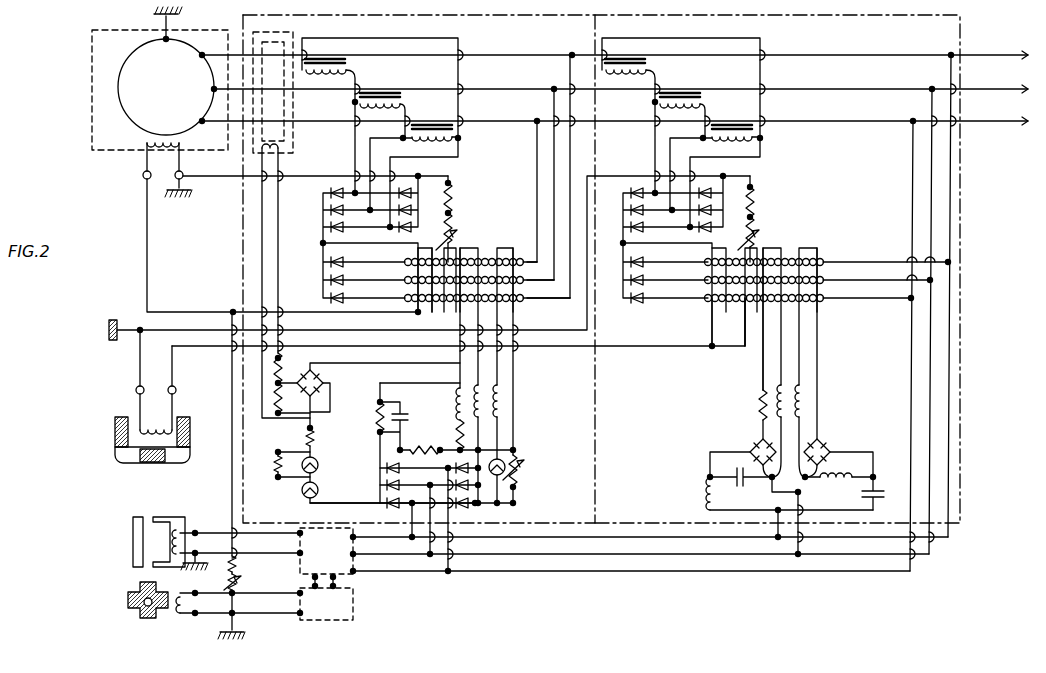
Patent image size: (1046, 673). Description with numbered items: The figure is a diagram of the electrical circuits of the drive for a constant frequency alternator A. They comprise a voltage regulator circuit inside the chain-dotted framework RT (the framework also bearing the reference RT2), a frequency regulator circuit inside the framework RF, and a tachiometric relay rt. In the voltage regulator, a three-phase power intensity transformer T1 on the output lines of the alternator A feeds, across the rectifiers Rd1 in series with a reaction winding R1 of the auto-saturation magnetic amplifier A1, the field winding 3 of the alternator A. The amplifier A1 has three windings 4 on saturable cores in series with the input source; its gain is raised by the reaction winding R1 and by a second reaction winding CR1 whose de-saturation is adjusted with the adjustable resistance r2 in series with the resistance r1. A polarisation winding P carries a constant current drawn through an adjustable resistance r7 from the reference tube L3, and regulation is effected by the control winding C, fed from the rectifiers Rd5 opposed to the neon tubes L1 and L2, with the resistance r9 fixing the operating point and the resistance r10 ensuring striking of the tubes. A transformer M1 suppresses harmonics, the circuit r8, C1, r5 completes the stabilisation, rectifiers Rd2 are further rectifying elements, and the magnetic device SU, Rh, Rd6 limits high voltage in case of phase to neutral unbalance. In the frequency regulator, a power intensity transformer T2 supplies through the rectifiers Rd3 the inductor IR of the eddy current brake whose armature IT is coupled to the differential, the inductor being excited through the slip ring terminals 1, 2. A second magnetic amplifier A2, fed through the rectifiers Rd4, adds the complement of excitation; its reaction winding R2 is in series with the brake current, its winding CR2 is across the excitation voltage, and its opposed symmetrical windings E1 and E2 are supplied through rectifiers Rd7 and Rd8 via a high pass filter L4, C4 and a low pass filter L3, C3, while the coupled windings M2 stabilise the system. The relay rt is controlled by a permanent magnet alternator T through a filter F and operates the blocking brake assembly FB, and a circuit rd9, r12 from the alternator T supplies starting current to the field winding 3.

The alternator A is at (94, 100).
The field winding 3 is at (165, 146).
The magnetic device SU is at (278, 148).
The three-phase power intensity transformer T1 is at (393, 72).
The power intensity transformer T2 is at (707, 72).
The regulator unit RT2 is at (601, 9).
The voltage regulator circuit RT is at (243, 242).
The frequency regulator circuit RF is at (961, 280).
The rectifiers Rd1 is at (314, 216).
The rectifier Rd2 is at (324, 276).
The rectifiers Rd3 is at (615, 206).
The rectifiers Rd4 is at (616, 271).
The rectifiers Rd5 is at (430, 485).
The rectifier of magnetic device Rd6 is at (329, 378).
The bridge rectifier Rd7 is at (830, 446).
The bridge rectifier Rd8 is at (751, 448).
The resistance r1 is at (452, 196).
The adjustable resistance r2 is at (458, 236).
The resistance r5 is at (456, 438).
The adjustable resistance r7 is at (524, 478).
The resistance r8 is at (378, 410).
The adjustable resistance r9 is at (313, 436).
The resistance r10 is at (276, 464).
The resistance r12 is at (234, 563).
The rectifier rd9 is at (236, 582).
The auto-saturation three-phase magnetic amplifier A1 is at (492, 240).
The auto-saturation three-phase magnetic amplifier A2 is at (795, 242).
The windings 4 is at (528, 298).
The reaction winding R1 is at (416, 306).
The reaction winding R2 is at (709, 305).
The second reaction winding CR1 is at (432, 312).
The reaction winding CR2 is at (744, 315).
The control winding C is at (466, 304).
The polarisation winding P is at (514, 300).
The symmetrical winding E1 is at (818, 302).
The symmetrical winding E2 is at (764, 306).
The terminal 1 is at (136, 387).
The terminal 2 is at (176, 390).
The inductor IR is at (150, 426).
The armature IT is at (118, 454).
The rheostat of magnetic device Rh is at (270, 388).
The capacitor C1 is at (406, 416).
The capacitor of low pass filter C3 is at (742, 488).
The capacitor of high pass filter C4 is at (881, 491).
The transformer M1 is at (504, 402).
The coupled windings M2 is at (803, 402).
The neon regulating tube L1 is at (318, 465).
The neon regulating tube L2 is at (317, 490).
The reference tube / low pass filter inductor L3 is at (506, 460).
The inductor of high pass filter L4 is at (834, 480).
The blocking brake assembly FB is at (132, 542).
The permanent magnet inductor type alternator T is at (130, 594).
The tachometric relay rt is at (326, 558).
The filter F is at (326, 604).